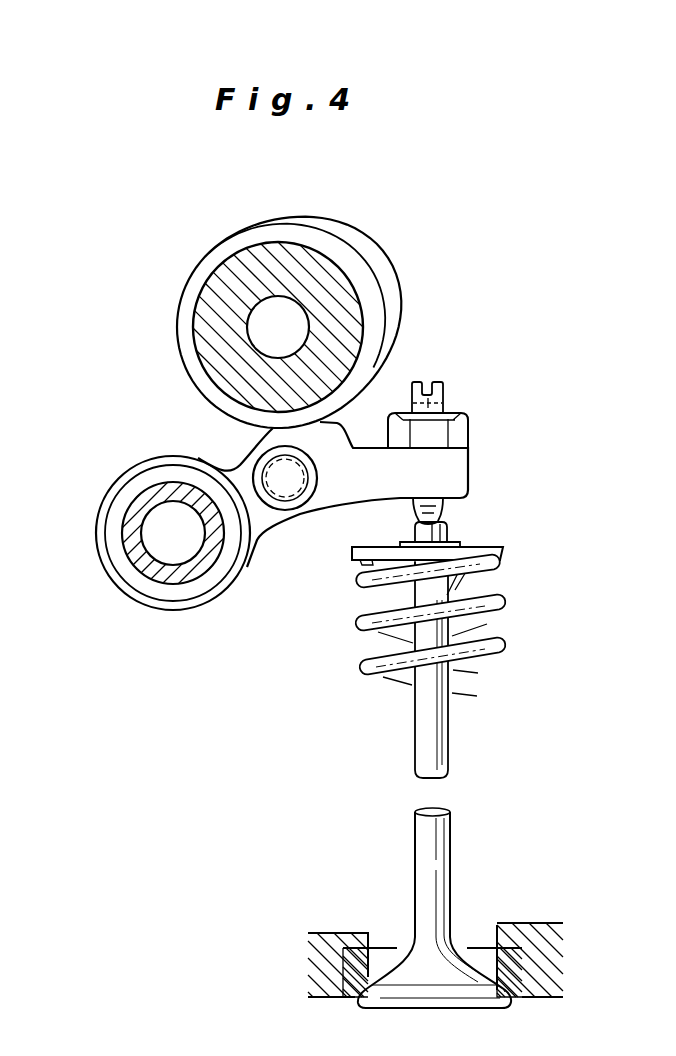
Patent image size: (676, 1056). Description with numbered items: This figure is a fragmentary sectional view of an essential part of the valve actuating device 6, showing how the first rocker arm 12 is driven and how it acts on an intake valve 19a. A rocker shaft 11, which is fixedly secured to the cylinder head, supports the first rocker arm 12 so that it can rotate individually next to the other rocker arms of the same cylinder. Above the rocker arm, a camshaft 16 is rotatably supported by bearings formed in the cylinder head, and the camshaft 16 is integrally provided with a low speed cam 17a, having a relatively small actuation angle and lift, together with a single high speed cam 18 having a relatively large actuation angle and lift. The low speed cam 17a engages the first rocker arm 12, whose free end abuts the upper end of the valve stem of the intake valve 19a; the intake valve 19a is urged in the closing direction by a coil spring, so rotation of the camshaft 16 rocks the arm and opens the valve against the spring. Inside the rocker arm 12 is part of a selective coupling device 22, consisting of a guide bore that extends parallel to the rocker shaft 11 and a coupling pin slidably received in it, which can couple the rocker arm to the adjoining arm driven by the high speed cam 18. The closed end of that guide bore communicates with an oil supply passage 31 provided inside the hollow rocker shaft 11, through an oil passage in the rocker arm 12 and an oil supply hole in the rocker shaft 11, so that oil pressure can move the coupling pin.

The valve operating mechanism 6 is at (480, 363).
The rocker shaft 11 is at (133, 503).
The first rocker arm 12 is at (225, 455).
The camshaft 16 is at (227, 260).
The low speed cam 17a is at (352, 230).
The high speed cam 18 is at (392, 250).
The intake valve 19a is at (462, 891).
The selective coupling device 22 is at (285, 500).
The oil supply passage 31 is at (153, 530).